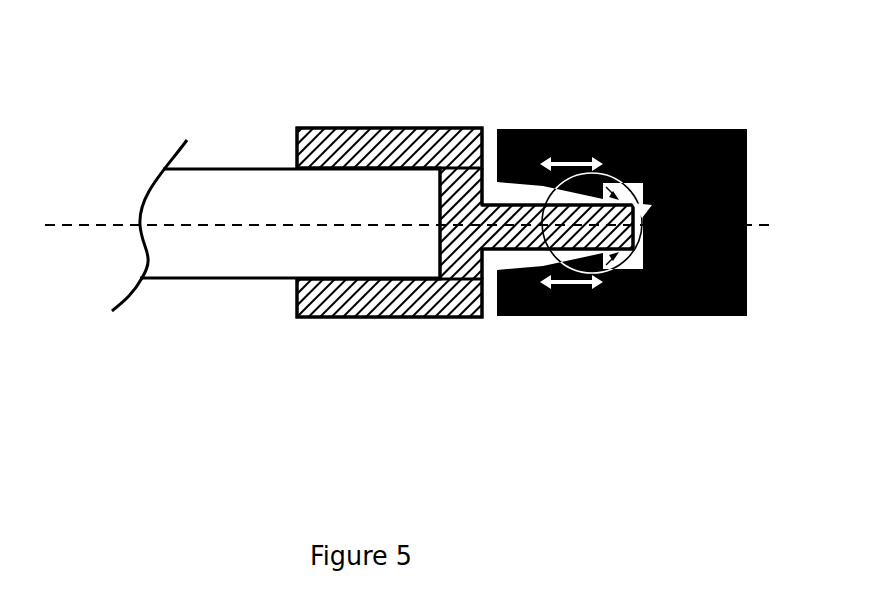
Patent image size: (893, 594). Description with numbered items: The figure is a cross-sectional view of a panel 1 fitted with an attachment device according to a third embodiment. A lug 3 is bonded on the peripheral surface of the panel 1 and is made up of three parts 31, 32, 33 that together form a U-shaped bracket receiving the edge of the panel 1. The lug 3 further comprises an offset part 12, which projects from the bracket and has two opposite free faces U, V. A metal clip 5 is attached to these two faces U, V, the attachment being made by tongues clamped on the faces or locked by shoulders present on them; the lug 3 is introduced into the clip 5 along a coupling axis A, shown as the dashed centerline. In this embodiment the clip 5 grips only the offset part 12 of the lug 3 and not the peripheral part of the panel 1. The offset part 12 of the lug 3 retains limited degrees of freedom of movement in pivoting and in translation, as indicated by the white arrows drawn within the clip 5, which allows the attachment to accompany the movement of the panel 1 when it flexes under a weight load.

The panel 1 is at (202, 180).
The lug 3 is at (423, 318).
The part of lug 31 is at (357, 132).
The part of lug 32 is at (303, 318).
The part of lug 33 is at (448, 128).
The offset part 12 is at (507, 237).
The metal clip 5 is at (676, 318).
The free face U is at (598, 128).
The free face V is at (597, 318).
The coupling axis A is at (427, 229).